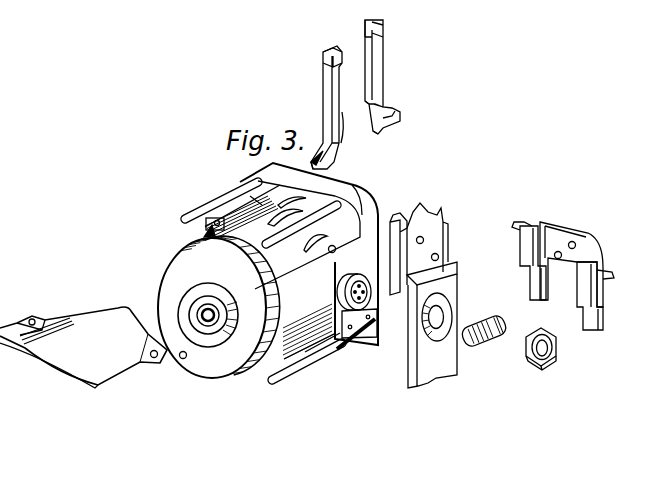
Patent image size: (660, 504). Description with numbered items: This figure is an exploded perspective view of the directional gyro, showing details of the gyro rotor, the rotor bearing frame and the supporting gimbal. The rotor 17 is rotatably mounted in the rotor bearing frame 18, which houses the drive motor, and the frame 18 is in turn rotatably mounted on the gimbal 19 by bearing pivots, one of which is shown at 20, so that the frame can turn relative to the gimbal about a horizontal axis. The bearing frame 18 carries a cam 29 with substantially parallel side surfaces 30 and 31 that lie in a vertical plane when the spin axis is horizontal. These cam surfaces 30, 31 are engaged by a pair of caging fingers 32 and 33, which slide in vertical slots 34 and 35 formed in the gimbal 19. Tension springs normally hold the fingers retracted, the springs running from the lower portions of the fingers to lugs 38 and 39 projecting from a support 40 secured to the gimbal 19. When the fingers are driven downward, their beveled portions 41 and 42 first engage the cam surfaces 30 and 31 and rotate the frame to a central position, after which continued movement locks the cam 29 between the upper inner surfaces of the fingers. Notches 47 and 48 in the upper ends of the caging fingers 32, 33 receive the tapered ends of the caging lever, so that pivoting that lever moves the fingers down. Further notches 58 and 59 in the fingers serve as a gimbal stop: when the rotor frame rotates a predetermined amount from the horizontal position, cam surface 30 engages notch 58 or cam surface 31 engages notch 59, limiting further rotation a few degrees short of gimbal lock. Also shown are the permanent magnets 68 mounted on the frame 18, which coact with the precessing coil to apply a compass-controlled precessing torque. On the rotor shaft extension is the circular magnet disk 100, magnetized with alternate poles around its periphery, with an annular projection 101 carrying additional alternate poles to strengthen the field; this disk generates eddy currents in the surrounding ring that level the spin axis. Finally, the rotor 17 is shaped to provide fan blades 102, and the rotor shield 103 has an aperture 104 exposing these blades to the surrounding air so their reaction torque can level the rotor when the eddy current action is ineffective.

The rotor 17 is at (205, 229).
The rotor bearing frame 18 is at (313, 348).
The gimbal 19 is at (450, 355).
The bearing pivot 20 is at (468, 318).
The cam 29 is at (362, 335).
The cam surface 30 is at (267, 261).
The cam surface 31 is at (377, 307).
The caging finger 32 is at (330, 98).
The caging finger 33 is at (379, 74).
The vertical slot 34 is at (400, 213).
The vertical slot 35 is at (452, 203).
The lug 38 is at (518, 223).
The lug 39 is at (614, 276).
The support 40 is at (572, 266).
The beveled portion 41 is at (342, 123).
The beveled portion 42 is at (367, 102).
The notch 47 is at (333, 50).
The notch 48 is at (375, 22).
The notch 58 is at (333, 154).
The notch 59 is at (376, 136).
The permanent magnets 68 is at (206, 208).
The magnet disk 100 is at (165, 270).
The annular projection 101 is at (180, 318).
The fan blades 102 is at (257, 195).
The rotor shield 103 is at (83, 342).
The aperture 104 is at (68, 325).